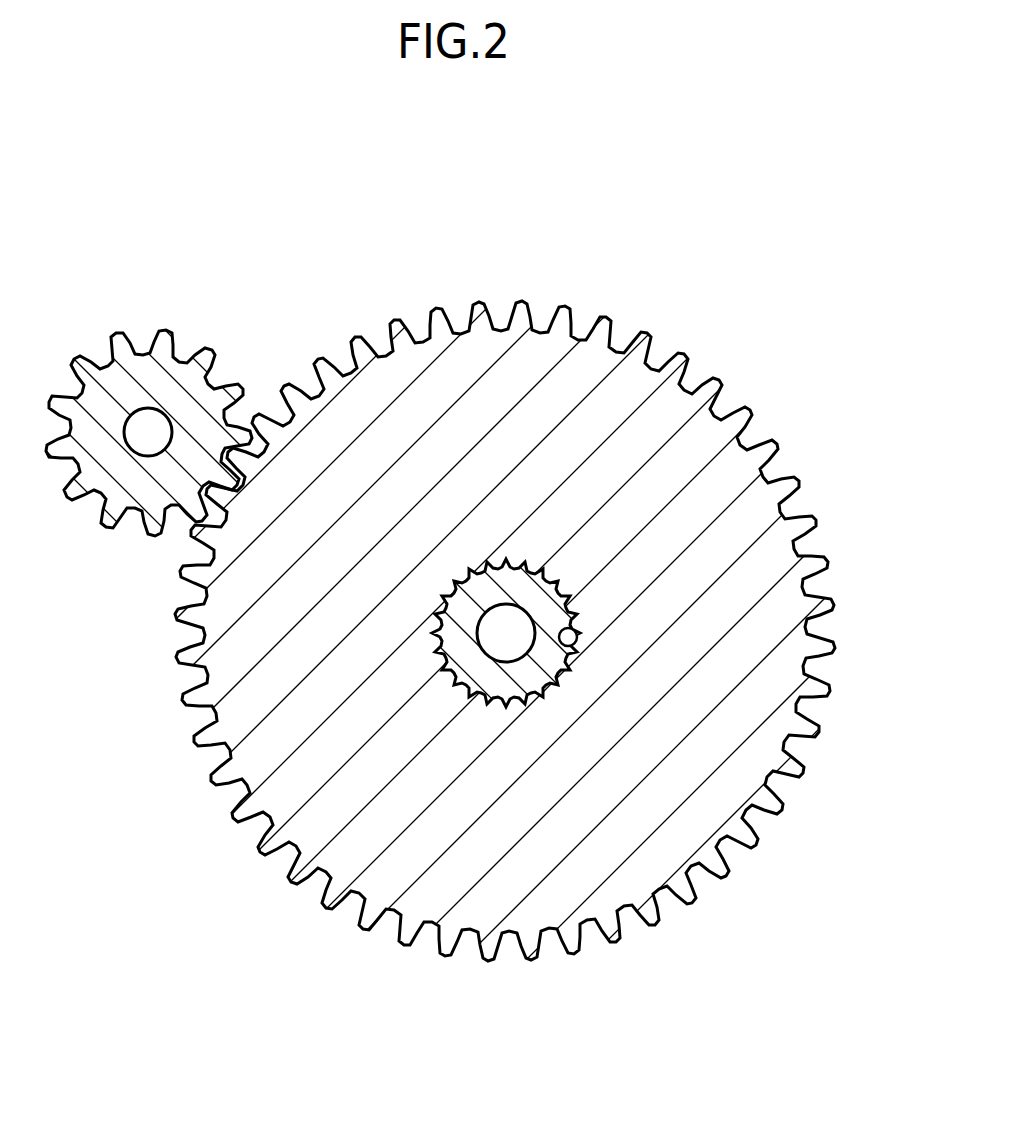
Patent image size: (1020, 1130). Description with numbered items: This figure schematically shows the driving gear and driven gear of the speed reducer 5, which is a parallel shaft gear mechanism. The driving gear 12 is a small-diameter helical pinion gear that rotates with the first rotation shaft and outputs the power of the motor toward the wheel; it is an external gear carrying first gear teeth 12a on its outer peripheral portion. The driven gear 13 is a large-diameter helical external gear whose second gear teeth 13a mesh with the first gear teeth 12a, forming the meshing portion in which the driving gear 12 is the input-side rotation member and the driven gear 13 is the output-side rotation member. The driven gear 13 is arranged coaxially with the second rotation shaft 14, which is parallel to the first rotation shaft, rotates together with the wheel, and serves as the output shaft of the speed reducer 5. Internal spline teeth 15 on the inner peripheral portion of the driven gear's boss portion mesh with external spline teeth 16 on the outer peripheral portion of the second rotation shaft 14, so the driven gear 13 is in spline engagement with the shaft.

The speed reducer 5 is at (362, 190).
The driving gear 12 is at (168, 326).
The first gear teeth 12a is at (200, 343).
The driven gear 13 is at (567, 308).
The second gear teeth 13a is at (455, 322).
The second rotation shaft 14 is at (493, 653).
The internal spline teeth 15 is at (582, 650).
The external spline teeth 16 is at (563, 575).